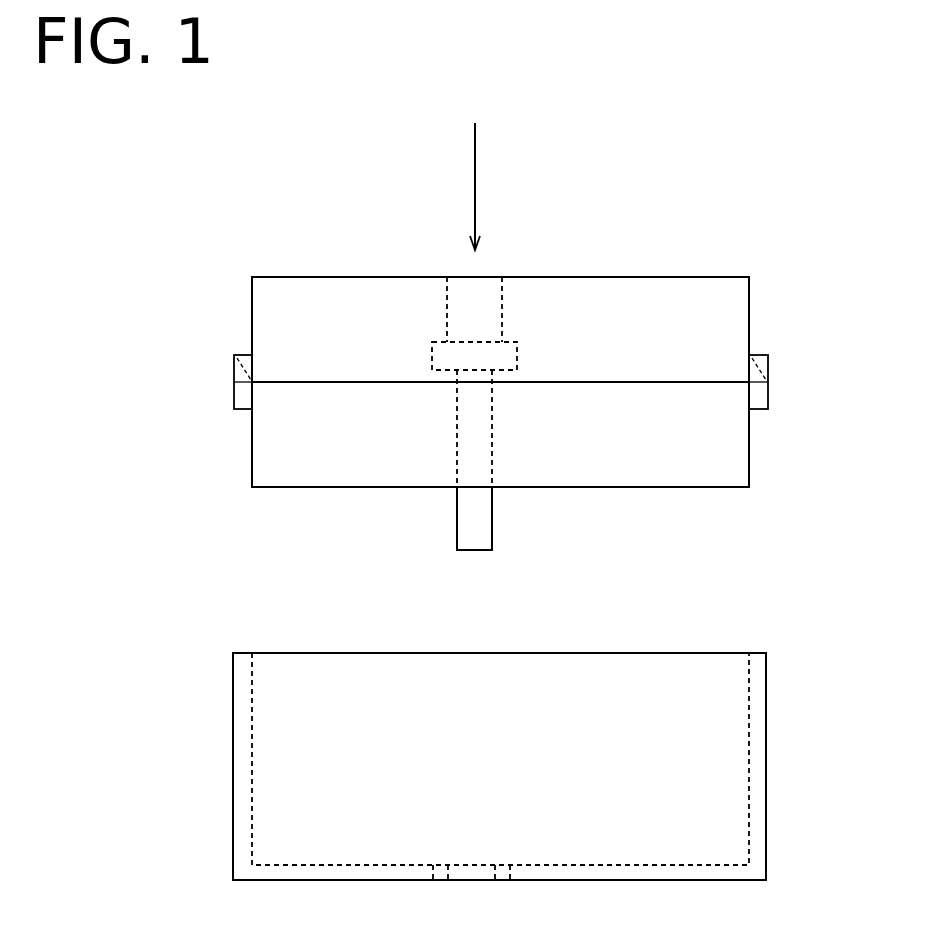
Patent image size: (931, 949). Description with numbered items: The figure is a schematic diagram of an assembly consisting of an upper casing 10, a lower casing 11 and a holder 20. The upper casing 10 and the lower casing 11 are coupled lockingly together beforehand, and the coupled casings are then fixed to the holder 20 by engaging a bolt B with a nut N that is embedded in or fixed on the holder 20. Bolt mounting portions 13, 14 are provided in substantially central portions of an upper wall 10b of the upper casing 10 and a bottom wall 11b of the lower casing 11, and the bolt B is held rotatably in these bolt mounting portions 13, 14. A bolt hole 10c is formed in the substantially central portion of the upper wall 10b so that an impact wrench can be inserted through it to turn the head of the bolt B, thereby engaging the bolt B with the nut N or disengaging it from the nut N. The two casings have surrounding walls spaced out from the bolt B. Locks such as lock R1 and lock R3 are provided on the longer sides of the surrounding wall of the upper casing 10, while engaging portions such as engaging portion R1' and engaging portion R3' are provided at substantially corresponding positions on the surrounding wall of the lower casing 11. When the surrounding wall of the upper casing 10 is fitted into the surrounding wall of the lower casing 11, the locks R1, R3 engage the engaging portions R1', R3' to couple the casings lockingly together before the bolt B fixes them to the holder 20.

The upper casing 10 is at (729, 317).
The lower casing 11 is at (739, 451).
The upper wall 10b is at (310, 277).
The bottom wall 11b is at (322, 488).
The bolt hole 10c is at (447, 313).
The bolt mounting portion 13 is at (508, 322).
The bolt mounting portion 14 is at (440, 450).
The bolt B is at (480, 523).
The lock R1 is at (207, 357).
The engaging portion R1' is at (202, 397).
The lock R3 is at (787, 363).
The engaging portion R3' is at (795, 393).
The holder 20 is at (733, 767).
The nut N is at (440, 880).